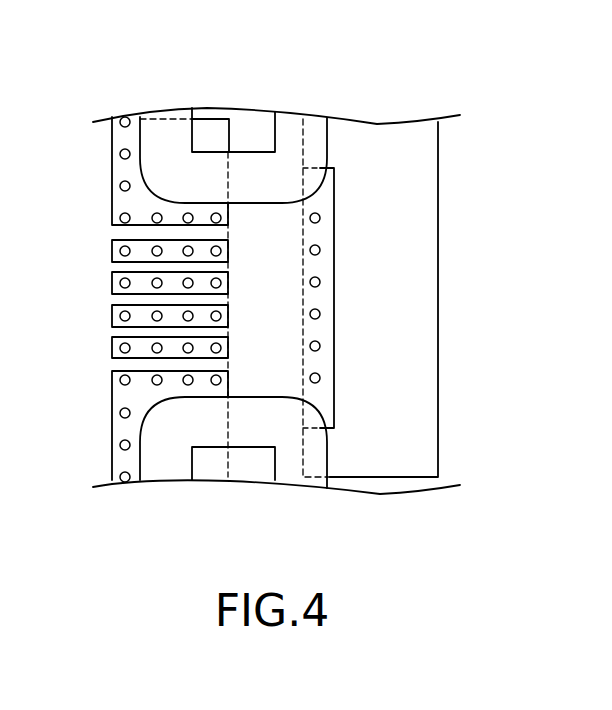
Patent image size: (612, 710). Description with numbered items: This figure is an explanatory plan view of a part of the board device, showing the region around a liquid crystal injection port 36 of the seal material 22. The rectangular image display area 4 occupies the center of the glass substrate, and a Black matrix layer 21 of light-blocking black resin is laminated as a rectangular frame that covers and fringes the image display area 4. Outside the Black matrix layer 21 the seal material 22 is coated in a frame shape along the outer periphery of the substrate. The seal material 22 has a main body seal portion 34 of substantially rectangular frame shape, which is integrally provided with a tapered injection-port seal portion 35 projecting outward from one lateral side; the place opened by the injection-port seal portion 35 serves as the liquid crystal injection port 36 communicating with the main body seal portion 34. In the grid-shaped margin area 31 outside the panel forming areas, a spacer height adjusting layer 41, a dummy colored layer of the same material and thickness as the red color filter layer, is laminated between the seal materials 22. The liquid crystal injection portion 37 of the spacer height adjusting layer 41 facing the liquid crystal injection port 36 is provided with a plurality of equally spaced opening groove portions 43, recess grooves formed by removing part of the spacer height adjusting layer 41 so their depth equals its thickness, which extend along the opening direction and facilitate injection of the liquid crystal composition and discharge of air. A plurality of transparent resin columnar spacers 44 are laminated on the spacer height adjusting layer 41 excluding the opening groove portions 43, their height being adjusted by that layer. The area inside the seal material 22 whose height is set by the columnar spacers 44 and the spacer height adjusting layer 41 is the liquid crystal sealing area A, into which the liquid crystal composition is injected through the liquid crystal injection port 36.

The image display area 4 is at (413, 138).
The Black matrix layer 21 is at (440, 197).
The seal material 22 is at (273, 132).
The margin area 31 is at (108, 364).
The main body seal portion 34 is at (330, 133).
The injection-port seal portion 35 is at (212, 162).
The liquid crystal injection port 36 is at (256, 372).
The liquid crystal injection portion 37 is at (165, 295).
The spacer height adjusting layer 41 is at (112, 205).
The opening groove portions 43 is at (120, 266).
The columnar spacers 44 is at (153, 214).
The liquid crystal sealing area A is at (453, 453).